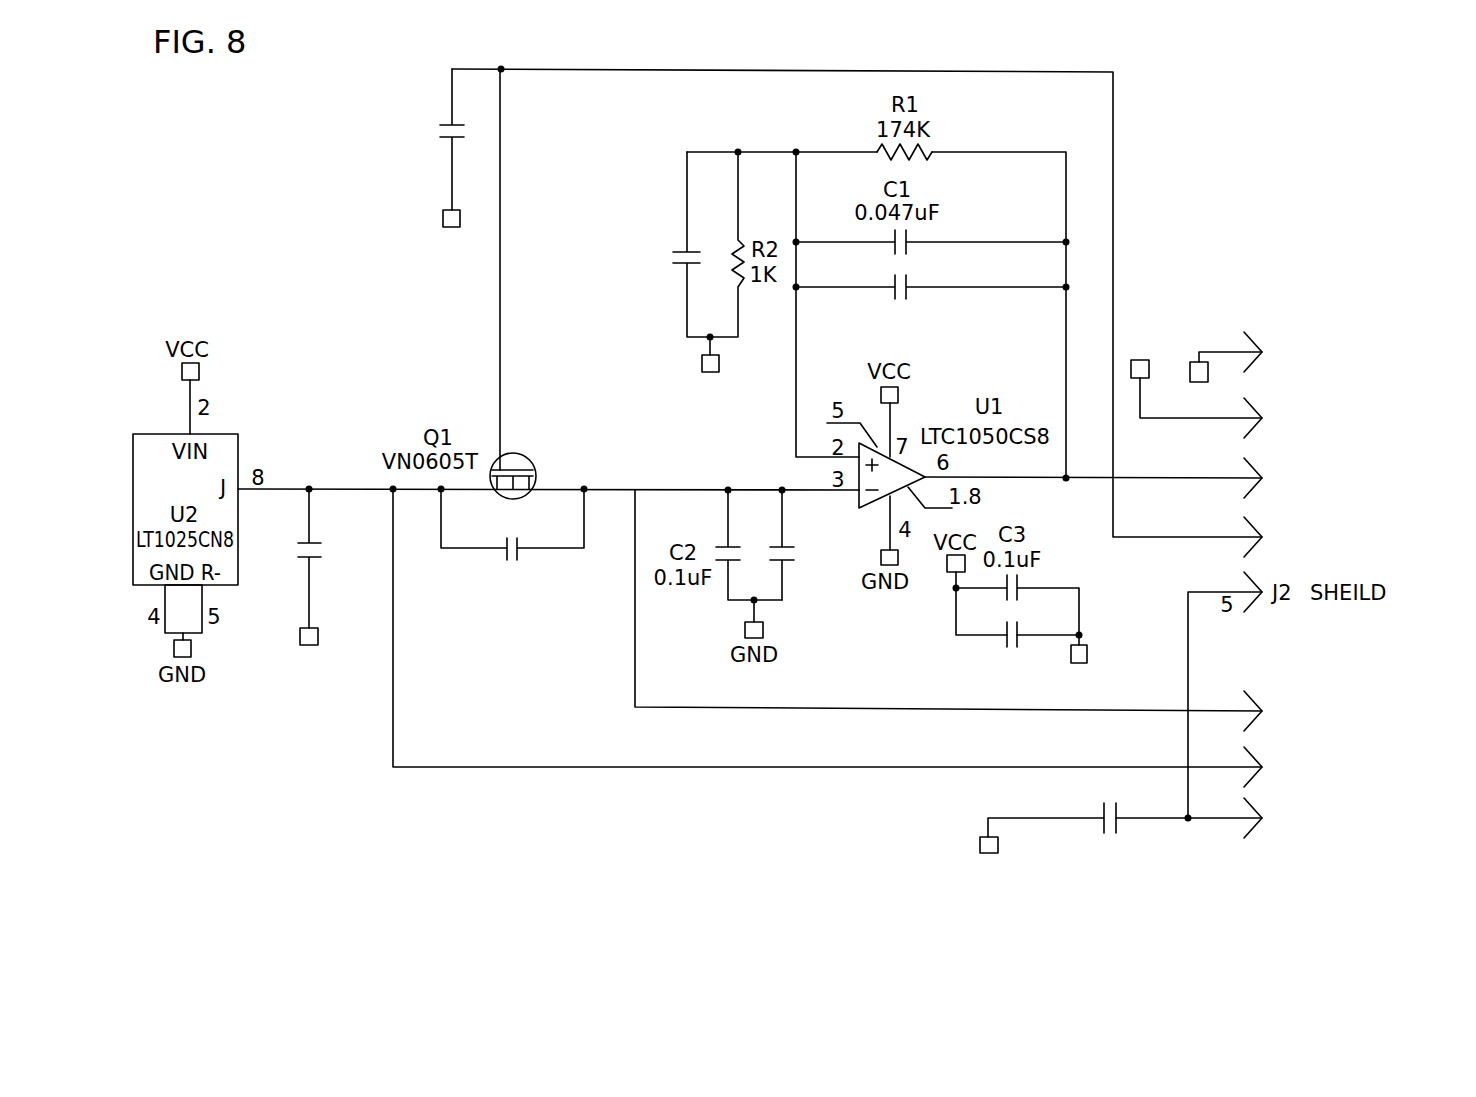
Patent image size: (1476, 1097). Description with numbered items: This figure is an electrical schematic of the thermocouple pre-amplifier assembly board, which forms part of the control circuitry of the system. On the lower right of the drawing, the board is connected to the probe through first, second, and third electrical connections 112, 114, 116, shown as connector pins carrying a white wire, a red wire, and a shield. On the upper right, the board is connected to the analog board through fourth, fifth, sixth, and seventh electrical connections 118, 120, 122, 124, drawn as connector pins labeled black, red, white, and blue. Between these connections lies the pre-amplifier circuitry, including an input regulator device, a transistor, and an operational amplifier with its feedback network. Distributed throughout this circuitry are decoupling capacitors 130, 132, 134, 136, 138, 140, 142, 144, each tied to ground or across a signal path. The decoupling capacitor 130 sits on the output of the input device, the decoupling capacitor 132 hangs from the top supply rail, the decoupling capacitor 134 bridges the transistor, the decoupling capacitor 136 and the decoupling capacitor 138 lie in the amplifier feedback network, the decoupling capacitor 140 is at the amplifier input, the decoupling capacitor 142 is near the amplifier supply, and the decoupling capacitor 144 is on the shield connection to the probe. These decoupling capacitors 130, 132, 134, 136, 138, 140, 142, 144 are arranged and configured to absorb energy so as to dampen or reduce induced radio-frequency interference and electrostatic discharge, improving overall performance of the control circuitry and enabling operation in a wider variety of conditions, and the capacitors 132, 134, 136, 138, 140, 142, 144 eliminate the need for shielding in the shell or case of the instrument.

The first electrical connection 112 is at (1387, 717).
The second electrical connection 114 is at (1387, 770).
The third electrical connection 116 is at (1392, 820).
The fourth electrical connection 118 is at (1393, 353).
The fifth electrical connection 120 is at (1393, 420).
The sixth electrical connection 122 is at (1390, 483).
The seventh electrical connection 124 is at (1390, 538).
The decoupling capacitor 130 is at (317, 542).
The decoupling capacitor 132 is at (427, 133).
The decoupling capacitor 134 is at (500, 555).
The decoupling capacitor 136 is at (663, 262).
The decoupling capacitor 138 is at (907, 282).
The decoupling capacitor 140 is at (780, 547).
The decoupling capacitor 142 is at (1000, 638).
The decoupling capacitor 144 is at (1103, 813).